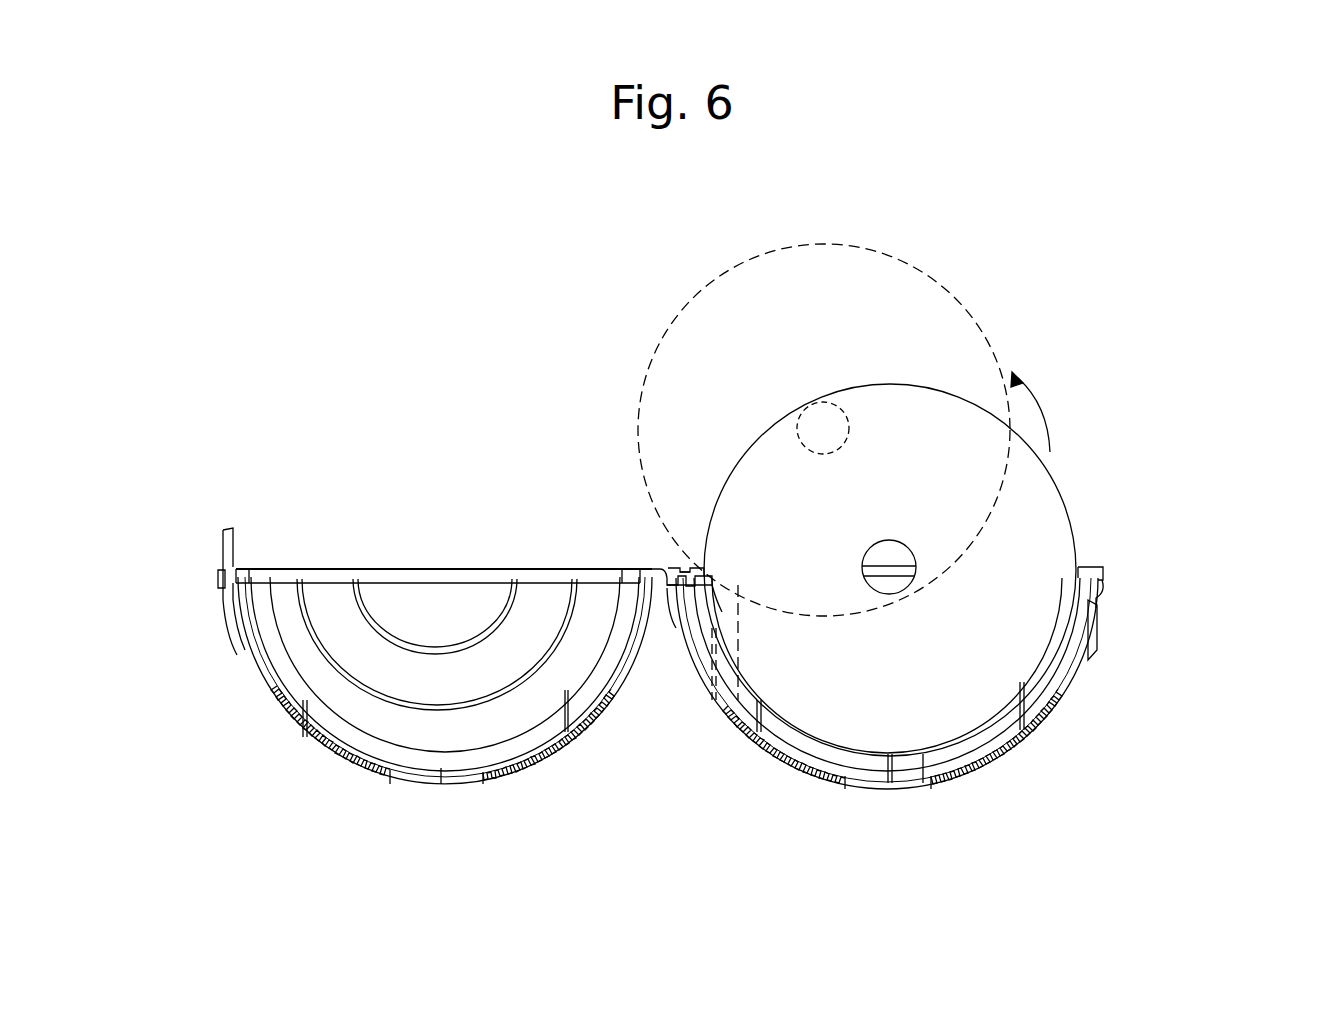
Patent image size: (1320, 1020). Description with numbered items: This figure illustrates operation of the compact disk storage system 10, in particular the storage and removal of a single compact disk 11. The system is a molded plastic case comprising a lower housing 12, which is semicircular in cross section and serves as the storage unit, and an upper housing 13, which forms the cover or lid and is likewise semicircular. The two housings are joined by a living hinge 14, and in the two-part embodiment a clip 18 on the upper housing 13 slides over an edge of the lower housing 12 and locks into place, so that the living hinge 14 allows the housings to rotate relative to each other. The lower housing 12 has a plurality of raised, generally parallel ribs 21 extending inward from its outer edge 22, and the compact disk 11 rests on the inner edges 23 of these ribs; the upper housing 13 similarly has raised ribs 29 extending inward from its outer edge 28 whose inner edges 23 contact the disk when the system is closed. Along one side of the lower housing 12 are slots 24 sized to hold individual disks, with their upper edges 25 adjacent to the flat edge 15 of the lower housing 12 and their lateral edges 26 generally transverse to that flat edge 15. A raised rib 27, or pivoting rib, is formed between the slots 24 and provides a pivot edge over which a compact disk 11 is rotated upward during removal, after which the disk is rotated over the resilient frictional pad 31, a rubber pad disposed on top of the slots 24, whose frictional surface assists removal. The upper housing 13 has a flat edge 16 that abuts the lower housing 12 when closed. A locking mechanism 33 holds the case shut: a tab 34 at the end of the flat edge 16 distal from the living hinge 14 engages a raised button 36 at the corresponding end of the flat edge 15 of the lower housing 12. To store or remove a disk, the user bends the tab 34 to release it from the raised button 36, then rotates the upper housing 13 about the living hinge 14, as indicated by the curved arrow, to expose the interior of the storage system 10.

The compact disk storage system 10 is at (1256, 304).
The compact disk 11 is at (1065, 488).
The lower housing 12 is at (860, 789).
The upper housing 13 is at (250, 688).
The living hinge 14 is at (665, 567).
The flat edge 15 is at (1097, 560).
The flat edge 16 is at (486, 567).
The clip 18 is at (690, 566).
The raised ribs 21 is at (760, 708).
The outer edge 22 is at (926, 752).
The inner edges 23 is at (569, 700).
The slots 24 is at (722, 612).
The upper edges 25 is at (713, 574).
The lateral edges 26 is at (742, 622).
The raised rib 27 is at (714, 670).
The outer edge 28 is at (443, 776).
The raised ribs 29 is at (311, 712).
The resilient frictional pad 31 is at (673, 556).
The locking mechanism 33 is at (158, 528).
The tab 34 is at (238, 538).
The raised button 36 is at (1112, 597).